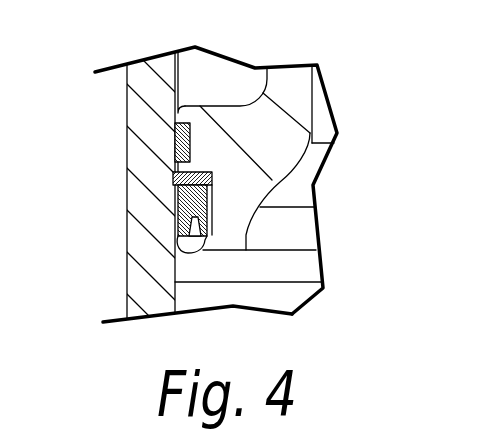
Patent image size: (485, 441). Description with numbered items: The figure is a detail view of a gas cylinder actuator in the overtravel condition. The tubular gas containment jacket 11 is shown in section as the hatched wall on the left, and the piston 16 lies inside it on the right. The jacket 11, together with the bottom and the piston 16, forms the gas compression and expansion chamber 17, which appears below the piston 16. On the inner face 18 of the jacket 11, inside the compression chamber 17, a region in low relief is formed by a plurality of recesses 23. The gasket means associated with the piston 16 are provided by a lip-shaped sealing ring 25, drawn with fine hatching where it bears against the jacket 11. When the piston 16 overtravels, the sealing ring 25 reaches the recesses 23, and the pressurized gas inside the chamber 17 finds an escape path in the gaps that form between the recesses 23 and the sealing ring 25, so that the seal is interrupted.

The tubular gas containment jacket 11 is at (127, 110).
The piston 16 is at (275, 146).
The gas compression and expansion chamber 17 is at (265, 293).
The inner face 18 is at (181, 77).
The recesses 23 is at (173, 180).
The lip-shaped sealing ring 25 is at (193, 200).